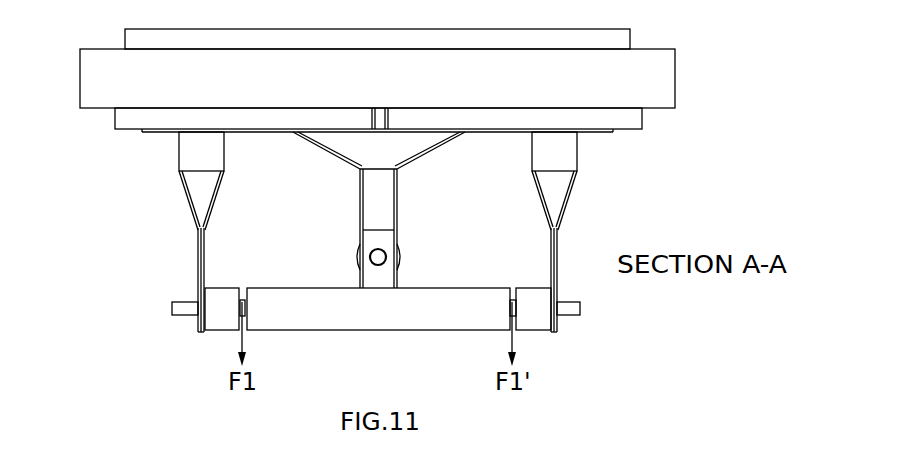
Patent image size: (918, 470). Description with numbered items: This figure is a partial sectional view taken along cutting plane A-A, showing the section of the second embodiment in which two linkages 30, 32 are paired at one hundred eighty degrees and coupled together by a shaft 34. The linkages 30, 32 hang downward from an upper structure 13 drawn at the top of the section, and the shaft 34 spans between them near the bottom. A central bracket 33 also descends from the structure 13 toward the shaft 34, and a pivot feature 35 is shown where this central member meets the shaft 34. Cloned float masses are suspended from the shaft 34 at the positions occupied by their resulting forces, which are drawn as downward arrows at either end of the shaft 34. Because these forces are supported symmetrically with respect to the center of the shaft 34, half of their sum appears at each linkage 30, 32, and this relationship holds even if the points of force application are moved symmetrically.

The platform / base plate assembly 13 is at (676, 80).
The linkage 30 is at (172, 153).
The linkage 32 is at (584, 155).
The central hanger bracket 33 is at (433, 160).
The shaft 34 is at (378, 331).
The pivot pin / hinge 35 is at (352, 250).